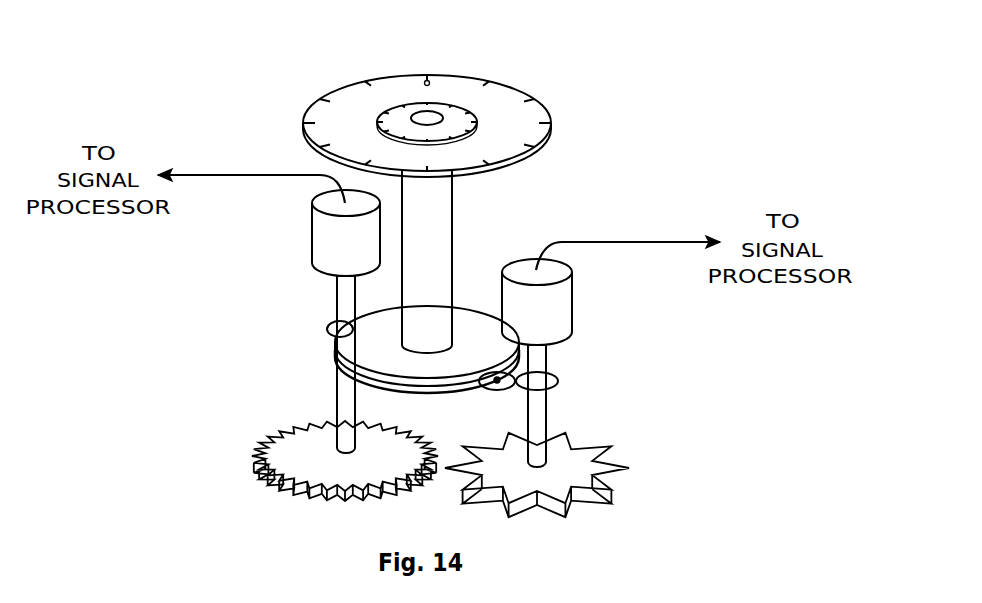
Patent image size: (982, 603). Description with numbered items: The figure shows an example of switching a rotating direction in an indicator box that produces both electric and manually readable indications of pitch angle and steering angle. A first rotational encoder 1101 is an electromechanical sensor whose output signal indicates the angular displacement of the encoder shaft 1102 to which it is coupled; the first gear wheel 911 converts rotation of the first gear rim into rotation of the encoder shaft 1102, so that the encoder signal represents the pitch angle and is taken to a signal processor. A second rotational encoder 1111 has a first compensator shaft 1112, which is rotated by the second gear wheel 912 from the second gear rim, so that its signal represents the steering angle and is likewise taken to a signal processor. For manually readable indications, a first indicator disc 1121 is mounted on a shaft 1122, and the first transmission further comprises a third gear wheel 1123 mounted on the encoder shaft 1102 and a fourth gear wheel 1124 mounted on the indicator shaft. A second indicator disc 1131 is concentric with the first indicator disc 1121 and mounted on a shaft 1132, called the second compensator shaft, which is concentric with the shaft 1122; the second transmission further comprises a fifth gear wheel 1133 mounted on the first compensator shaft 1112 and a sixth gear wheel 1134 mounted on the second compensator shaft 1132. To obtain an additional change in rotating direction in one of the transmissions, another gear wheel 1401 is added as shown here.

The first gear wheel 911 is at (253, 458).
The second gear wheel 912 is at (632, 468).
The first rotational encoder 1101 is at (315, 240).
The encoder shaft 1102 is at (336, 403).
The second rotational encoder 1111 is at (573, 298).
The first compensator shaft 1112 is at (548, 410).
The first indicator disc 1121 is at (415, 106).
The shaft 1122 is at (433, 117).
The third gear wheel 1123 is at (333, 327).
The fourth gear wheel 1124 is at (330, 368).
The second indicator disc 1131 is at (553, 115).
The shaft 1132 is at (453, 212).
The fifth gear wheel 1133 is at (559, 378).
The sixth gear wheel 1134 is at (333, 347).
The another gear wheel 1401 is at (512, 390).